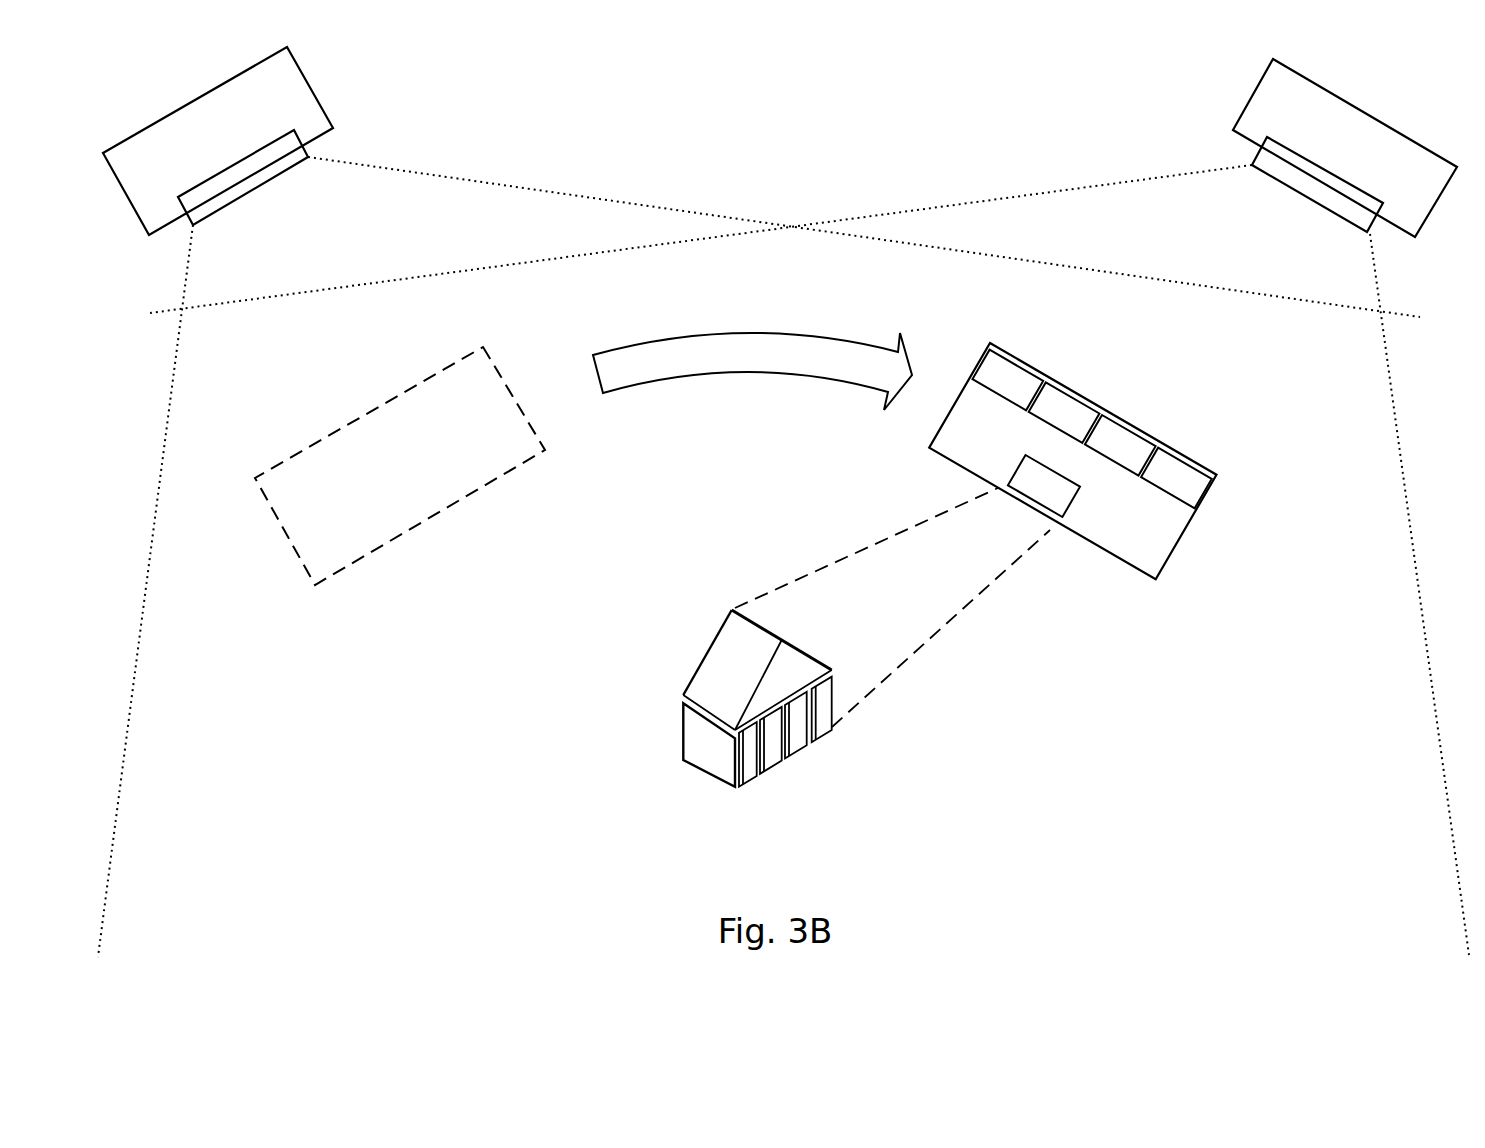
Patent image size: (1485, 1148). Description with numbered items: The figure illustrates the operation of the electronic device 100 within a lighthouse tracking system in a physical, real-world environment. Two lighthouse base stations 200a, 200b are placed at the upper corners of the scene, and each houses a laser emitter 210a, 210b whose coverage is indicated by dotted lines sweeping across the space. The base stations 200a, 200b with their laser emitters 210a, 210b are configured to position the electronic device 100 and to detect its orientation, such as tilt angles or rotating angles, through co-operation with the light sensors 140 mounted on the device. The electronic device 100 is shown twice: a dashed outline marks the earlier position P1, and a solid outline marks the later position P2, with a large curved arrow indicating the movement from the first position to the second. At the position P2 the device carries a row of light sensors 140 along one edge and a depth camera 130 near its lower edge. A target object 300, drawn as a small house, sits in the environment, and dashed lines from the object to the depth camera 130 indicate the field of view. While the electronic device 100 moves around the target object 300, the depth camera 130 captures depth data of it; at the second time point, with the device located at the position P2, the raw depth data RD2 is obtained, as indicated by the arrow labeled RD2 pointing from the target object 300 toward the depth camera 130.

The electronic device 100 is at (736, 464).
The depth camera 130 is at (1044, 486).
The light sensors 140 is at (1092, 429).
The lighthouse base station 200a is at (218, 141).
The lighthouse base station 200b is at (1345, 148).
The laser emitter 210a is at (243, 177).
The laser emitter 210b is at (1317, 184).
The target object 300 is at (782, 757).
The position P1 is at (335, 385).
The position P2 is at (1240, 385).
The raw depth data RD2 is at (985, 551).